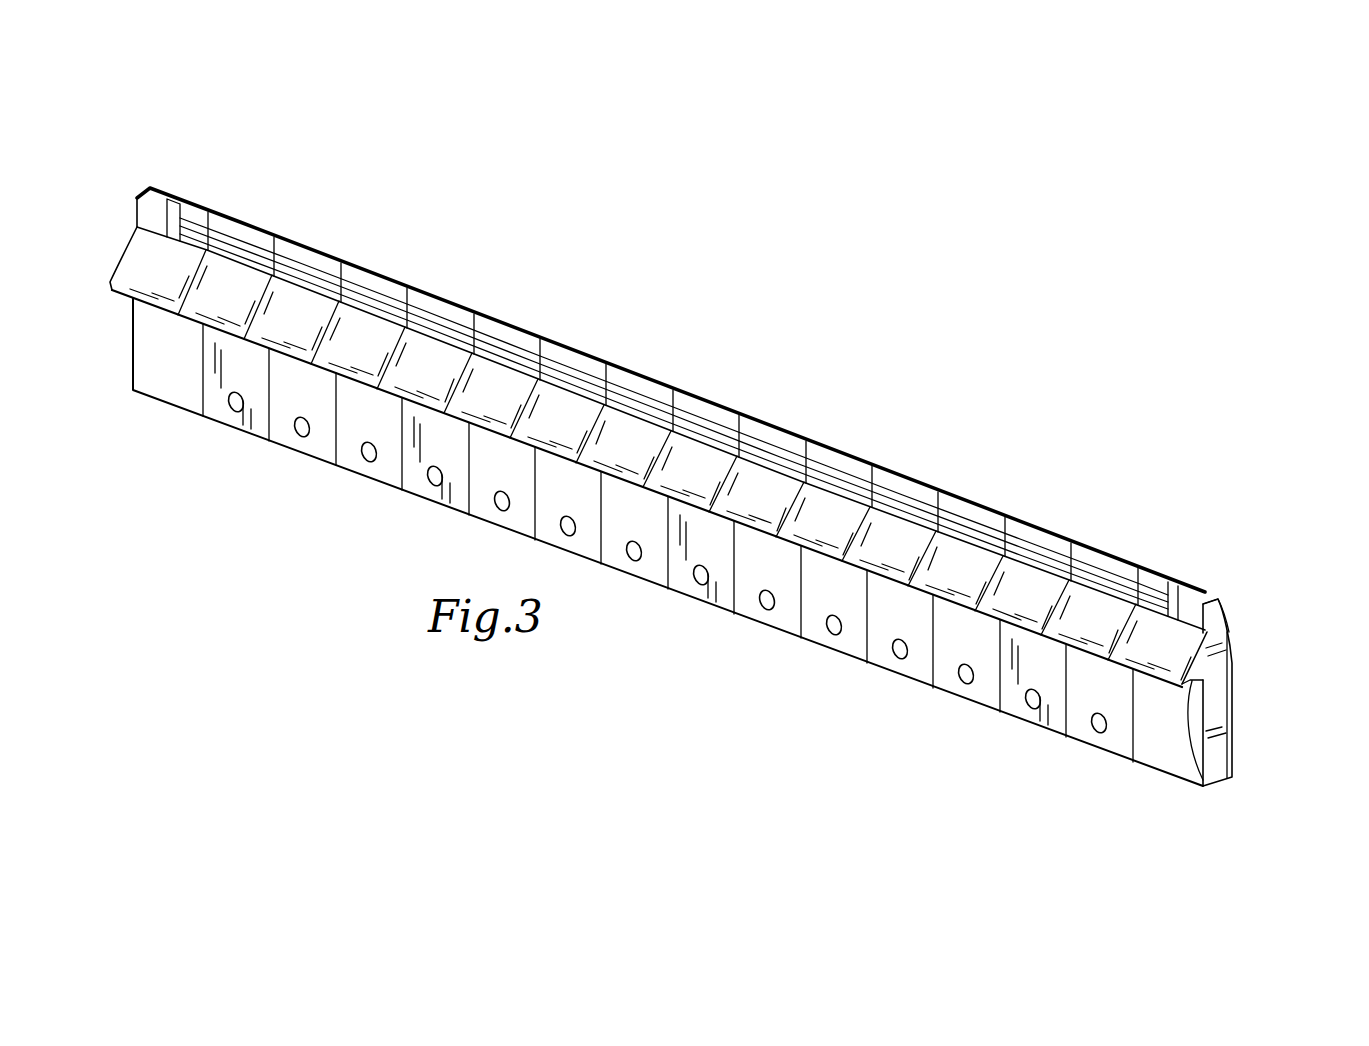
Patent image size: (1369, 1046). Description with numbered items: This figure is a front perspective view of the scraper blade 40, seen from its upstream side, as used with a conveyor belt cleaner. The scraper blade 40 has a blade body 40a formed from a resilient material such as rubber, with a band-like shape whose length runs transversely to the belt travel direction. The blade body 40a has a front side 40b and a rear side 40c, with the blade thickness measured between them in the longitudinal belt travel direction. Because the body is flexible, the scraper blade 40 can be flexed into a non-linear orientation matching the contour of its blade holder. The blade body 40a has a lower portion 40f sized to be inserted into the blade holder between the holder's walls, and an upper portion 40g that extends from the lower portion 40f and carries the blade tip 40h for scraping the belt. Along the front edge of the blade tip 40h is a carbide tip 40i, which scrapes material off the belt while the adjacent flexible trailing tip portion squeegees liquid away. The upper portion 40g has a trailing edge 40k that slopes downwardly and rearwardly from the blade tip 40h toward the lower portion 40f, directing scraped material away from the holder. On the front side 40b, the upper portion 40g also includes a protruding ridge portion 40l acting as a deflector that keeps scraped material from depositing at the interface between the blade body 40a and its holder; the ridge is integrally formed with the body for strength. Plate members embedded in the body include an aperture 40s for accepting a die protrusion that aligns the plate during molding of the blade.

The scraper blade 40 is at (153, 123).
The blade body 40a is at (100, 316).
The front side 40b is at (1162, 752).
The rear side 40c is at (1232, 735).
The lower portion 40f is at (1285, 690).
The upper portion 40g is at (1267, 607).
The blade tip 40h is at (383, 256).
The carbide tip 40i is at (430, 303).
The trailing edge 40k is at (1226, 617).
The protruding ridge portion 40l is at (1204, 782).
The aperture 40s is at (368, 462).